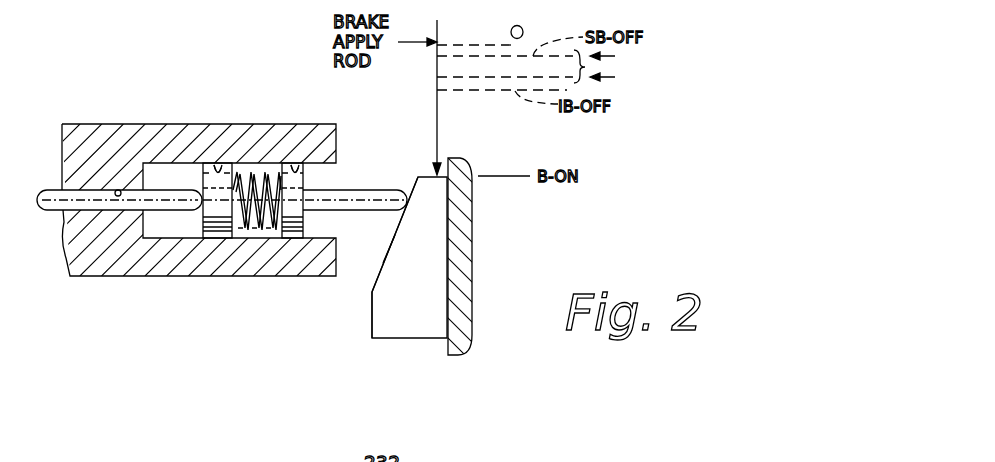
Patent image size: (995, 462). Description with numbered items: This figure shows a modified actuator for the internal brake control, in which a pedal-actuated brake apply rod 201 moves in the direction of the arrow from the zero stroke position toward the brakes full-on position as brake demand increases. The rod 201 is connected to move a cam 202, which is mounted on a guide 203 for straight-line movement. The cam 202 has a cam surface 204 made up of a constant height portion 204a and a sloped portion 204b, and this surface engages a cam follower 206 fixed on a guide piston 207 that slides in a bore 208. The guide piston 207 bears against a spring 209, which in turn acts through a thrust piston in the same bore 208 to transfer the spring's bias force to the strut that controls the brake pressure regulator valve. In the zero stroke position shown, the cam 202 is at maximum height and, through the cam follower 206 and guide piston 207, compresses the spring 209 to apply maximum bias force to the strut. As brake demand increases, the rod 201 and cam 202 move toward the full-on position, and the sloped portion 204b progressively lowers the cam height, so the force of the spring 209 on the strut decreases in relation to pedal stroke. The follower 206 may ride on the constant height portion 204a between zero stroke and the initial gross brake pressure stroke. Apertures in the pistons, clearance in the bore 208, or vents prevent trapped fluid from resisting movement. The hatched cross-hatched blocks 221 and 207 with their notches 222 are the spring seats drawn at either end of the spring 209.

The cam follower 206 is at (365, 194).
The spring retainer 221 is at (215, 238).
The guide piston 207 is at (288, 238).
The notches 222 is at (295, 170).
The bore 208 is at (270, 232).
The spring 209 is at (250, 232).
The cam 202 is at (420, 318).
The cam surface 204 is at (410, 190).
The constant height portion 204a is at (372, 312).
The sloped portion 204b is at (383, 263).
The guide 203 is at (457, 302).
The brake apply rod 201 is at (437, 108).